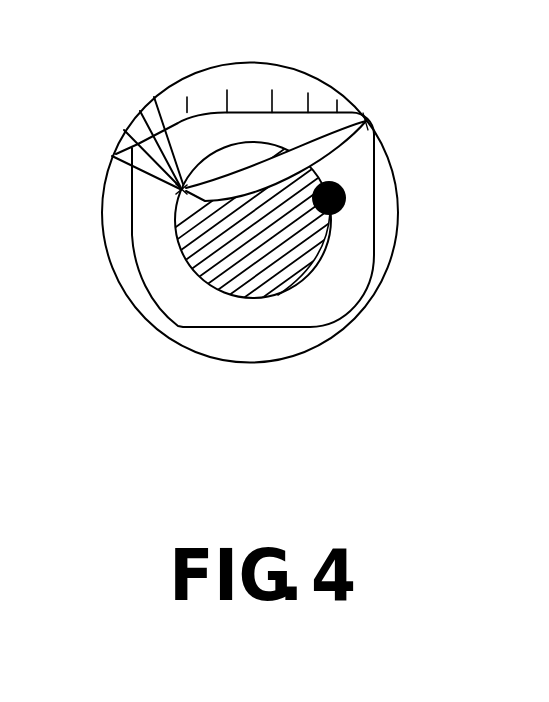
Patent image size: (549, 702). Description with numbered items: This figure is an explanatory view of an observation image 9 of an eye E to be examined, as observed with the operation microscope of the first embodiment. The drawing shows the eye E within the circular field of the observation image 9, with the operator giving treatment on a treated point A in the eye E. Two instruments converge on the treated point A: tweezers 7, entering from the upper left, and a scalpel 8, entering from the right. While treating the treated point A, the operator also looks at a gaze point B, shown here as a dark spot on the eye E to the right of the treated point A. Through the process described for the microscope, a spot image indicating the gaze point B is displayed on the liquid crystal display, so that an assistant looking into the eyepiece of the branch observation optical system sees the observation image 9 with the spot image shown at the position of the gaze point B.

The tweezers 7 is at (150, 119).
The scalpel 8 is at (365, 125).
The observation image 9 is at (220, 361).
The treated point A is at (180, 190).
The gaze point B is at (347, 196).
The eye to be examined E is at (343, 294).